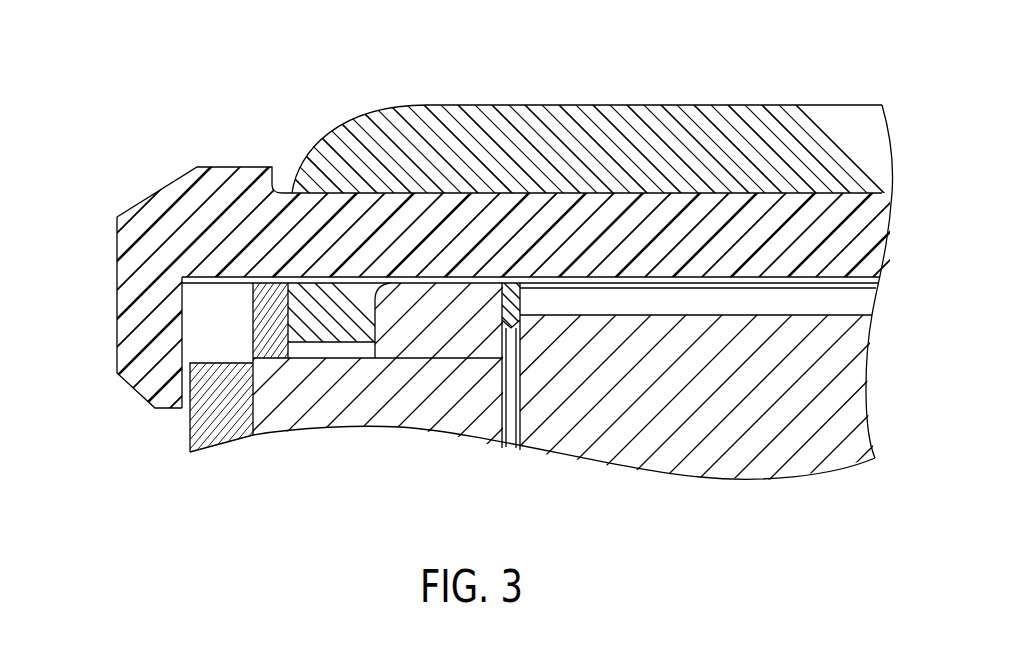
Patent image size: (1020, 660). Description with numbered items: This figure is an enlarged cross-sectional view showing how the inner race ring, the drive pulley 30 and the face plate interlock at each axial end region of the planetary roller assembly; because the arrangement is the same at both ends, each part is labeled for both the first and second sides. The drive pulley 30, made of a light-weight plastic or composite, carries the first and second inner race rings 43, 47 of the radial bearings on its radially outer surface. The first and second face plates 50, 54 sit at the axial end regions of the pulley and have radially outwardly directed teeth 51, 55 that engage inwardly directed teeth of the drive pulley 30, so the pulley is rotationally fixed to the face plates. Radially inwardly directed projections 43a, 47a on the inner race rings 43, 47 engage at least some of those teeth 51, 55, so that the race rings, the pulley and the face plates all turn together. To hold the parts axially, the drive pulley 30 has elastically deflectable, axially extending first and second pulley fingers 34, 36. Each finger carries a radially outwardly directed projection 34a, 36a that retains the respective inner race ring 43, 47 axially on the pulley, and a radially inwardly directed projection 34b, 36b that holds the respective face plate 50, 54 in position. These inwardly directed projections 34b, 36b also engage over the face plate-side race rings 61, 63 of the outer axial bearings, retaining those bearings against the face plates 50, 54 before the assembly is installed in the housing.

The drive pulley 30 is at (762, 222).
The first pulley fingers 34 is at (510, 285).
The second pulley fingers 36 is at (510, 285).
The radially outwardly directed projection 34a is at (188, 184).
The radially outwardly directed projection 36a is at (197, 187).
The radially inwardly directed projection 34b is at (106, 354).
The radially inwardly directed projection 36b is at (137, 340).
The first inner race ring 43 is at (510, 243).
The second inner race ring 47 is at (510, 243).
The radially inwardly directed projections 43a is at (199, 272).
The radially inwardly directed projections 47a is at (310, 308).
The first face plate 50 is at (556, 384).
The second face plate 54 is at (556, 384).
The radially outwardly directed teeth 51 is at (473, 382).
The radially outwardly directed teeth 55 is at (443, 307).
The face plate-side race ring 61 is at (225, 435).
The face plate-side race ring 63 is at (218, 437).